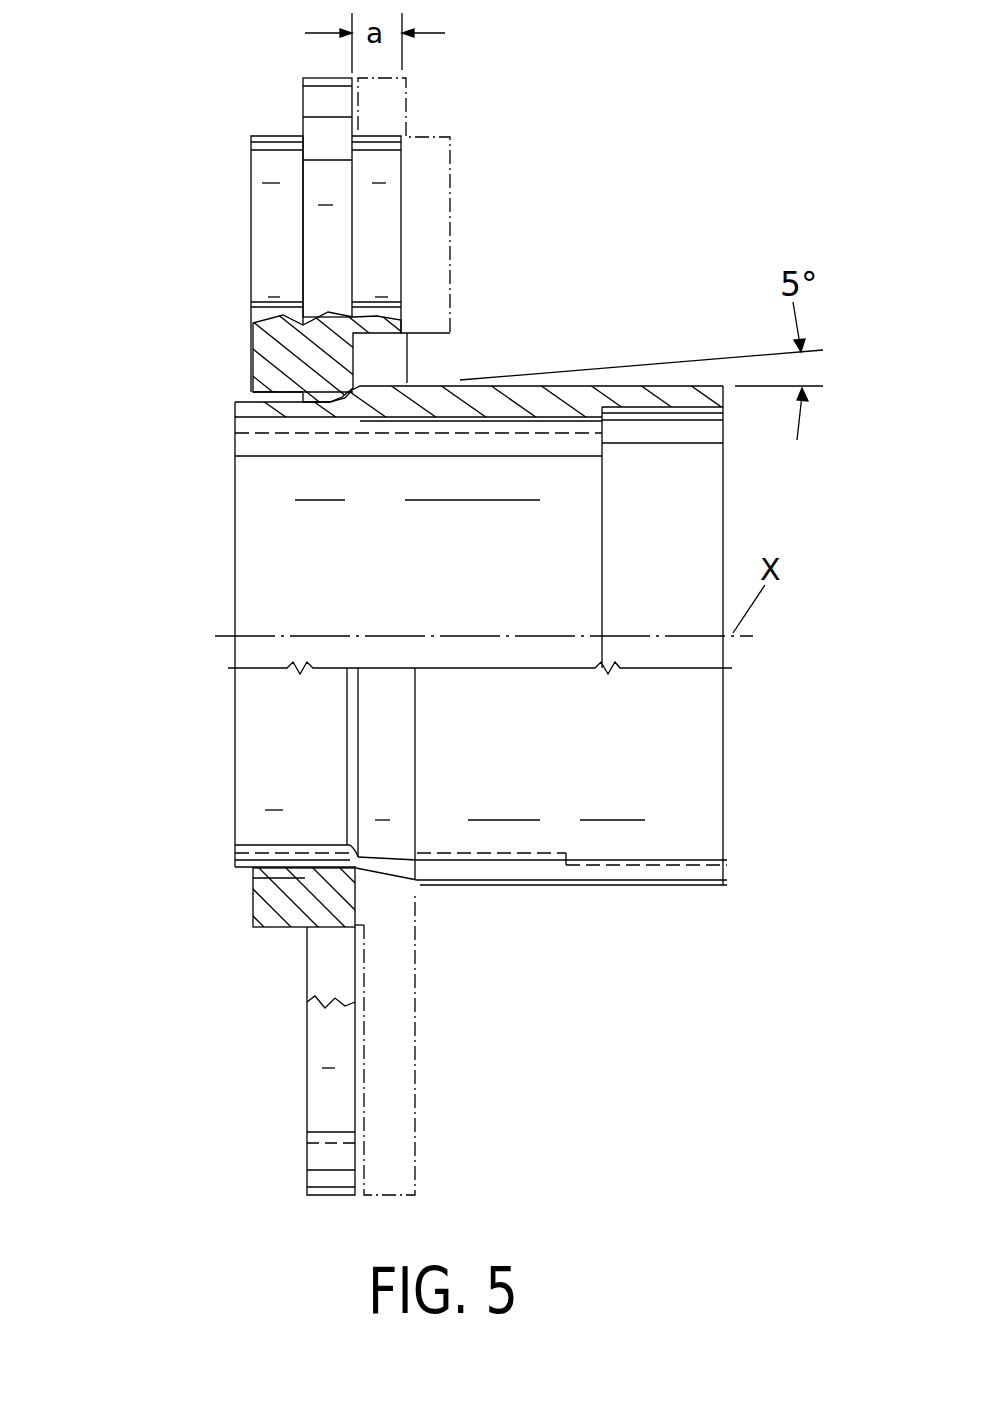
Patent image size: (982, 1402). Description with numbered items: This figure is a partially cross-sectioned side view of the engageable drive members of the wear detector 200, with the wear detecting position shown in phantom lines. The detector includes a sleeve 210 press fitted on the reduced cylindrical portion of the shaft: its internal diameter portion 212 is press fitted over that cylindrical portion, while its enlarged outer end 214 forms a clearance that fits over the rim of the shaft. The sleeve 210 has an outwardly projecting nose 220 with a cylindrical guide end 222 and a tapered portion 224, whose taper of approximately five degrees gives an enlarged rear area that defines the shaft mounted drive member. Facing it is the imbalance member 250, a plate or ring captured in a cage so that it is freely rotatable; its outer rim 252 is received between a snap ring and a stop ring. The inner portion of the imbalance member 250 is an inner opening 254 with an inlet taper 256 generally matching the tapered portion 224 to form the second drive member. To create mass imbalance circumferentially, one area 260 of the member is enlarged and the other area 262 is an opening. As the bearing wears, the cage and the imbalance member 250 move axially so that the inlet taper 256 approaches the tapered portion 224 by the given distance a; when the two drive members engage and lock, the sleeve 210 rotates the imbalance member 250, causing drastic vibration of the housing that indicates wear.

The wear detector 200 is at (240, 360).
The sleeve 210 is at (648, 892).
The internal diameter portion 212 is at (540, 418).
The enlarged outer end 214 is at (678, 405).
The nose 220 is at (293, 422).
The cylindrical guide end 222 is at (255, 807).
The tapered portion 224 is at (367, 397).
The imbalance member 250 is at (410, 172).
The outer rim 252 is at (332, 105).
The inner opening 254 is at (285, 393).
The inlet taper 256 is at (322, 382).
The enlarged area 260 is at (285, 243).
The opening 262 is at (332, 970).